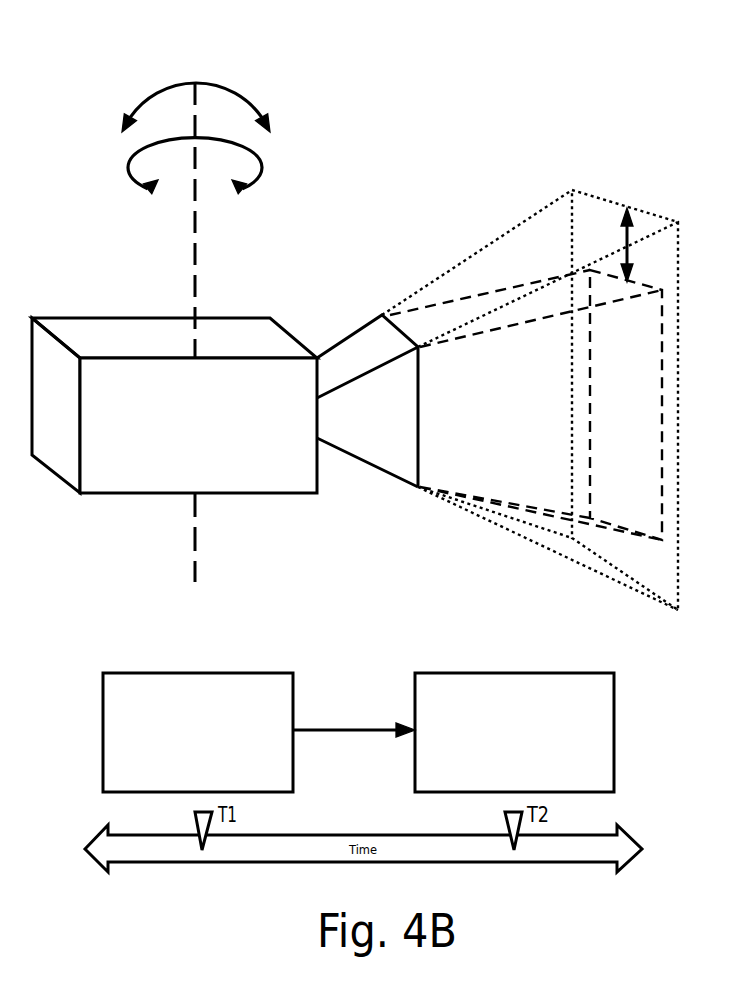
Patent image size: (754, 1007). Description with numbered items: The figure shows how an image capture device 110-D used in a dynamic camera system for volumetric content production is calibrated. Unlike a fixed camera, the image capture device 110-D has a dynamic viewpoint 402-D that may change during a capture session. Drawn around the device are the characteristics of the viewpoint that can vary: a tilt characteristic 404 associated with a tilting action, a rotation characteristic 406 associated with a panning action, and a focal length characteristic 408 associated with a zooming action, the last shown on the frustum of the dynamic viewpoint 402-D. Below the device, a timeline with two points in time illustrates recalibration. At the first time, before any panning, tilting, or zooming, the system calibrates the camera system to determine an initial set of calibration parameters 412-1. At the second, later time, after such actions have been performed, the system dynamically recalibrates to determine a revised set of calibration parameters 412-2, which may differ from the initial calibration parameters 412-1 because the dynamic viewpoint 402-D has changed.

The tilt characteristic 404 is at (222, 84).
The rotation characteristic 406 is at (263, 203).
The image capture device 110-D is at (171, 467).
The dynamic viewpoint 402-D is at (626, 157).
The focal length characteristic 408 is at (625, 257).
The initial set of calibration parameters 412-1 is at (173, 772).
The revised set of calibration parameters 412-2 is at (489, 772).